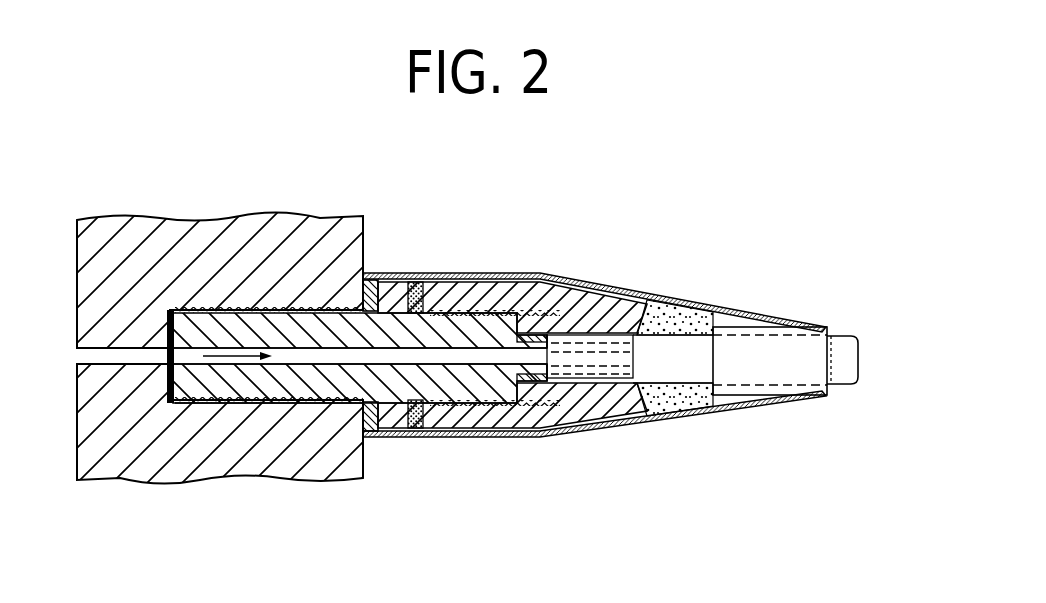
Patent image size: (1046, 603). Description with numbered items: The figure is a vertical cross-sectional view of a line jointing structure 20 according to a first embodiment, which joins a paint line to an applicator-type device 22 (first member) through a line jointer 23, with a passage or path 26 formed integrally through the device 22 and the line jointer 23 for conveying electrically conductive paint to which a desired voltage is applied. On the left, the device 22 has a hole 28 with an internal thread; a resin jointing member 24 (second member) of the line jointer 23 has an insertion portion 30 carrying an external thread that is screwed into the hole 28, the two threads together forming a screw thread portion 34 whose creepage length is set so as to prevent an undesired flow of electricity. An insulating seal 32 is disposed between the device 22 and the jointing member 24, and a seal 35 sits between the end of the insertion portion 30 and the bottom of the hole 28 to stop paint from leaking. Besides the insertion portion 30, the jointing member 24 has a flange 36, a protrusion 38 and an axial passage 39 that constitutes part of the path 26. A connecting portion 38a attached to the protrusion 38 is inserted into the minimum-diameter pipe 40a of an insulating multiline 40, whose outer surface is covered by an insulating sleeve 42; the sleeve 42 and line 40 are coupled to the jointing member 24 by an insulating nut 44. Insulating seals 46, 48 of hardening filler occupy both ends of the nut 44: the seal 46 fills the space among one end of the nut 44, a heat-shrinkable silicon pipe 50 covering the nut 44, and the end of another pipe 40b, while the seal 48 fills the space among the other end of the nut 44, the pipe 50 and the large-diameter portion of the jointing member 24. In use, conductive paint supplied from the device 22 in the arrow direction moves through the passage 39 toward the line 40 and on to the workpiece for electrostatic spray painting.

The line jointing structure 20 is at (670, 177).
The device 22 is at (266, 481).
The line jointer 23 is at (494, 447).
The jointing member 24 is at (356, 333).
The passage or path 26 is at (104, 362).
The hole 28 is at (250, 313).
The insertion portion 30 is at (213, 386).
The insulating seal 32 is at (353, 478).
The screw thread portion 34 is at (222, 308).
The seal 35 is at (170, 404).
The flange 36 is at (378, 292).
The protrusion 38 is at (509, 357).
The connecting portion 38a is at (532, 383).
The passage 39 is at (449, 366).
The line 40 is at (745, 363).
The pipe 40a is at (671, 356).
The pipe 40b is at (797, 394).
The insulating sleeve 42 is at (612, 413).
The insulating nut 44 is at (555, 273).
The insulating seal 46 is at (669, 318).
The insulating seal 48 is at (419, 430).
The pipe 50 is at (714, 397).